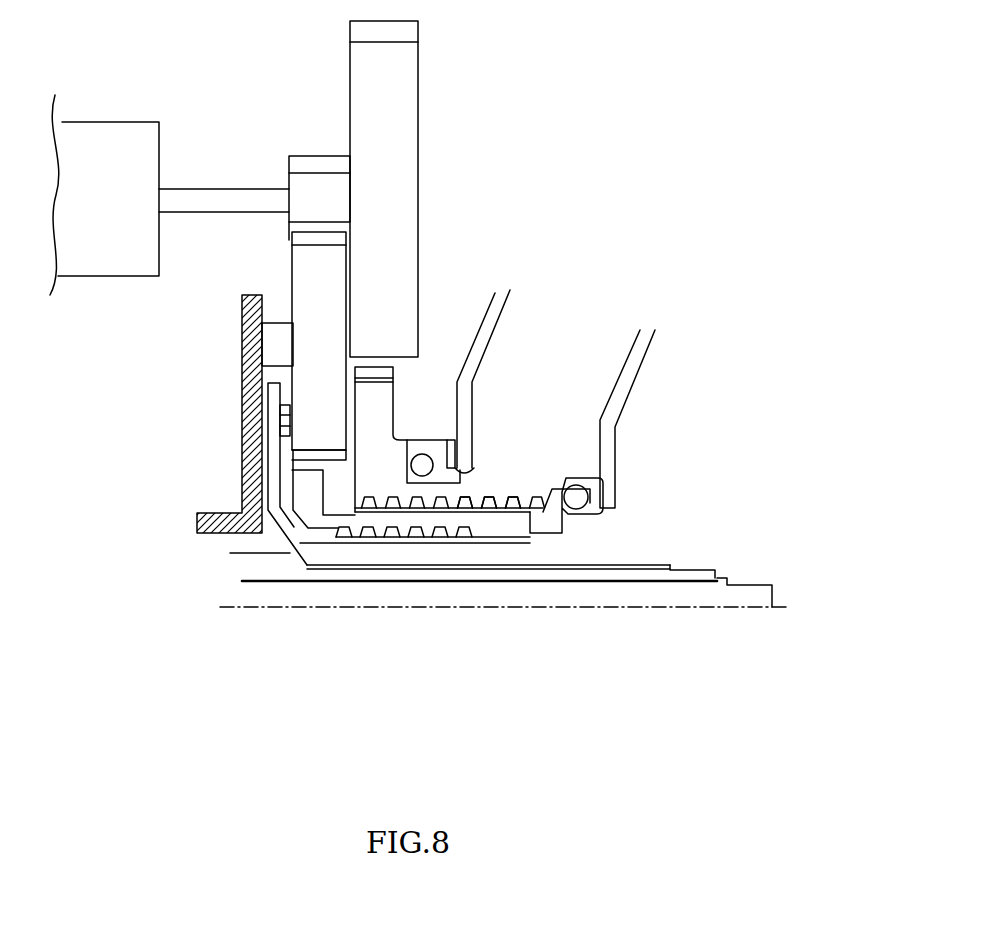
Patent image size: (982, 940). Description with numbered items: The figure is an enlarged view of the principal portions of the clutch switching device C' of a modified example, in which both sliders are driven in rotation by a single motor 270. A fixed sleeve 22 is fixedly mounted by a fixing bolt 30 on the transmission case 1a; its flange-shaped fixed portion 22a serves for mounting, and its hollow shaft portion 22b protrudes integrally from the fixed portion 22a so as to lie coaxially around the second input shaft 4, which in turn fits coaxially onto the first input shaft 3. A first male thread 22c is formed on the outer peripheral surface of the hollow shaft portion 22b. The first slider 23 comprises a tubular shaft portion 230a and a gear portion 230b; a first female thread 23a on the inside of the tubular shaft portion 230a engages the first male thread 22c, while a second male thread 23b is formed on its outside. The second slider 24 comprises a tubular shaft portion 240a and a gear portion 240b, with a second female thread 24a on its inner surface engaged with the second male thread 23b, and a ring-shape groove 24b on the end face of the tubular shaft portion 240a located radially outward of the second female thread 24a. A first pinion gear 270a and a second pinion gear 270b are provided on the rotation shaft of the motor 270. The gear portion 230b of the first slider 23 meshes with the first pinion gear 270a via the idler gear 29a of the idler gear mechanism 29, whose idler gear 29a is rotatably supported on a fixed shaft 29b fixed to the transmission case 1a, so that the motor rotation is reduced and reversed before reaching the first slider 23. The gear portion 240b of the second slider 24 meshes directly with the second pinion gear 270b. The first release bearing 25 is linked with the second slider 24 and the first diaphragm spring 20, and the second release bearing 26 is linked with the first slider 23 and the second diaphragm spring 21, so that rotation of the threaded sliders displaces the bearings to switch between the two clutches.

The transmission case 1a is at (215, 418).
The first input shaft 3 is at (727, 578).
The second input shaft 4 is at (627, 563).
The first diaphragm spring 20 is at (490, 320).
The second diaphragm spring 21 is at (637, 353).
The fixed sleeve 22 is at (205, 680).
The fixed portion 22a is at (262, 532).
The hollow shaft portion 22b is at (375, 558).
The first male thread 22c is at (417, 540).
The first slider 23 is at (475, 705).
The first female thread 23a is at (505, 533).
The second male thread 23b is at (515, 507).
The tubular shaft portion 230a is at (498, 530).
The gear portion 230b is at (465, 515).
The second slider 24 is at (532, 138).
The second female thread 24a is at (385, 502).
The ring-shape groove 24b is at (444, 426).
The tubular shaft portion 240a is at (420, 434).
The gear portion 240b is at (373, 397).
The first release bearing 25 is at (443, 454).
The second release bearing 26 is at (590, 478).
The idler gear mechanism 29 is at (132, 305).
The idler gear 29a is at (310, 340).
The fixed shaft 29b is at (275, 350).
The fixing bolt 30 is at (280, 420).
The motor 270 is at (104, 121).
The first pinion gear 270a is at (323, 192).
The second pinion gear 270b is at (390, 148).
The clutch switching device C' is at (823, 109).